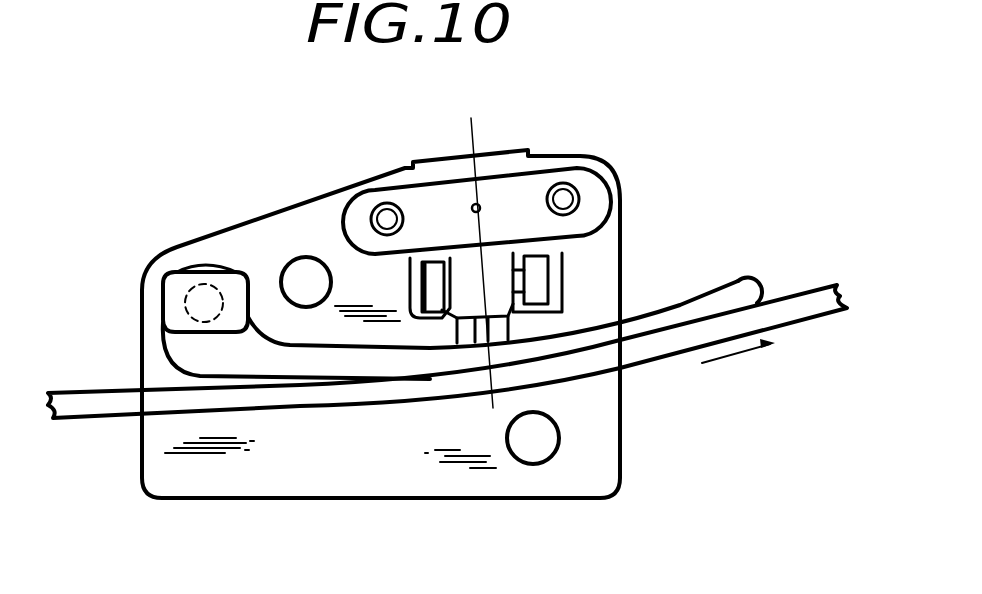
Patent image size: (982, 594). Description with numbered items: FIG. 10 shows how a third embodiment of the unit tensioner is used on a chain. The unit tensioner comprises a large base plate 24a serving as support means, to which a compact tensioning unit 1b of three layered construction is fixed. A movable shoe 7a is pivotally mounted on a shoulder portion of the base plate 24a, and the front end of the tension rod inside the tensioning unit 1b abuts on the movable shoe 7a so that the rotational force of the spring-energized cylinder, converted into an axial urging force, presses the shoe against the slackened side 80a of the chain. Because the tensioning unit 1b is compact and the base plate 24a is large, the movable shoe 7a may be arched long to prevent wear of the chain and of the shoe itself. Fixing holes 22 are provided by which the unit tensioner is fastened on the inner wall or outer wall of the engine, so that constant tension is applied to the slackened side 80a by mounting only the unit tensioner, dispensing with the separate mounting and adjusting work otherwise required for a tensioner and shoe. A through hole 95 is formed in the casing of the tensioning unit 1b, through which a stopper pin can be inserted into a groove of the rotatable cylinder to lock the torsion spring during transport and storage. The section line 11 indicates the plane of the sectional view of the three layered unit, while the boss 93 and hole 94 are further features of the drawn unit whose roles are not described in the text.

The tensioning unit 1b is at (540, 172).
The movable shoe 7a is at (665, 308).
The section line 11 is at (446, 413).
The fixing holes 22 is at (288, 267).
The base plate 24a is at (610, 452).
The slackened side of the chain 80a is at (683, 345).
The shaft boss 93 is at (200, 276).
The hole 94 is at (570, 194).
The through hole 95 is at (478, 203).